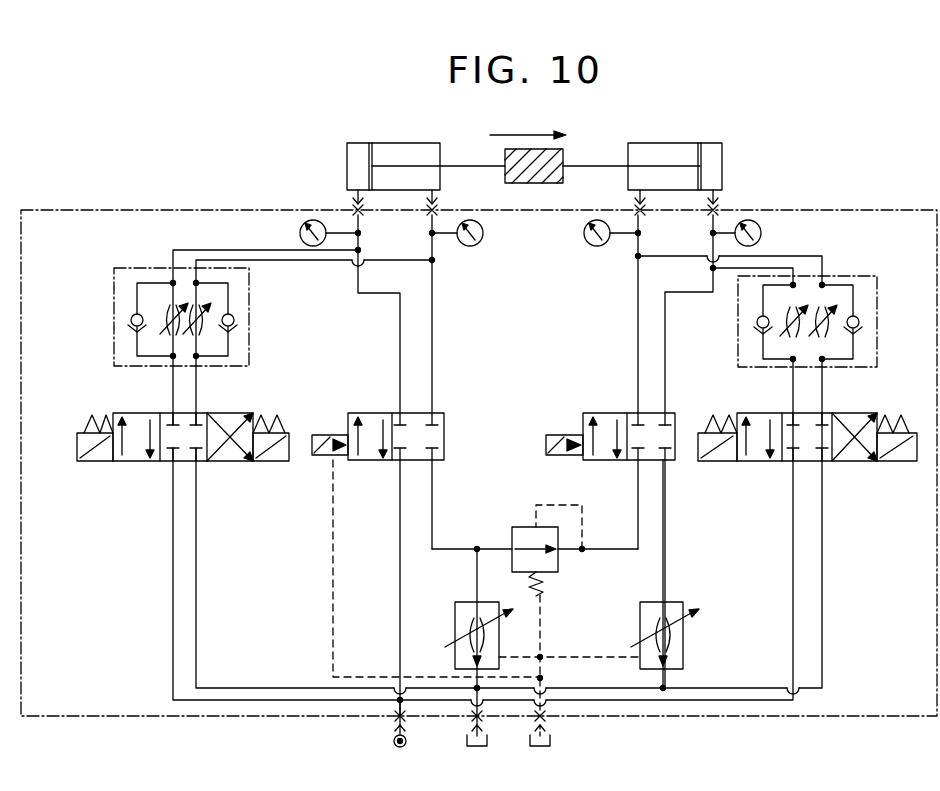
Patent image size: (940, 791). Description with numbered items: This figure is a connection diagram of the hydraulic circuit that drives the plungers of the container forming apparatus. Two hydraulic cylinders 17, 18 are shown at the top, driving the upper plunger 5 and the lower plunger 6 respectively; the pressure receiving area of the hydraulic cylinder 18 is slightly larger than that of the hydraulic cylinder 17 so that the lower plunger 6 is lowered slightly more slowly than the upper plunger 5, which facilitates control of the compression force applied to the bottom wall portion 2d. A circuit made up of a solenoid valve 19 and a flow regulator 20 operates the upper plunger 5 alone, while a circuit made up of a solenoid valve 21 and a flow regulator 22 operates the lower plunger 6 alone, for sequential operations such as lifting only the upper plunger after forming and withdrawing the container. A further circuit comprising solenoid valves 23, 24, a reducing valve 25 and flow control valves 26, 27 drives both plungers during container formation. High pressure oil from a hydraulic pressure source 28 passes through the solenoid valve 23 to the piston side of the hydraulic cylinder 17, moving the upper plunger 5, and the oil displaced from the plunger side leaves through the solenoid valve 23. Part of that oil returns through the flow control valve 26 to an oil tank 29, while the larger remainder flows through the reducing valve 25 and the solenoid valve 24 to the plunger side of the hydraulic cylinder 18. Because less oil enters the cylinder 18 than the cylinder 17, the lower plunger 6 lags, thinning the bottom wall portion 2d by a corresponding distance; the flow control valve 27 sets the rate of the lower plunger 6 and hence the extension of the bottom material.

The hydraulic cylinder 17 is at (347, 166).
The hydraulic cylinder 18 is at (722, 166).
The upper plunger 5 is at (470, 166).
The lower plunger 6 is at (597, 166).
The bottom wall portion 2d is at (563, 180).
The solenoid valve 19 is at (140, 465).
The flow regulator 20 is at (110, 329).
The solenoid valve 21 is at (868, 465).
The flow regulator 22 is at (882, 336).
The solenoid valve 23 is at (448, 412).
The solenoid valve 24 is at (614, 412).
The reducing valve 25 is at (510, 530).
The flow control valve 26 is at (450, 614).
The flow control valve 27 is at (688, 614).
The hydraulic pressure source 28 is at (392, 742).
The oil tank 29 is at (466, 742).